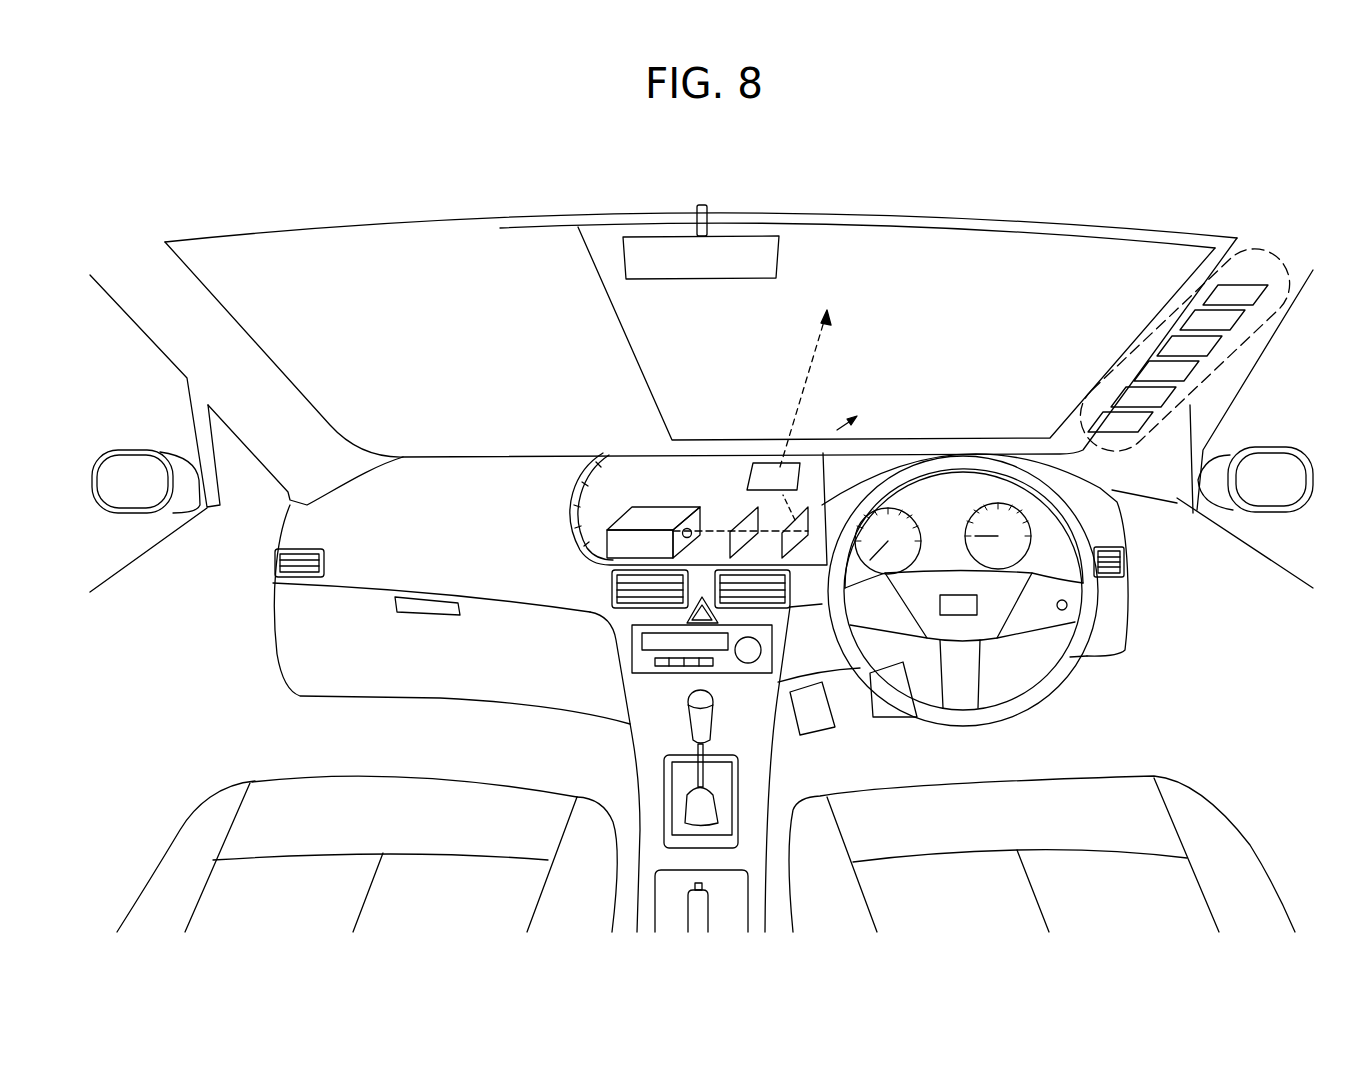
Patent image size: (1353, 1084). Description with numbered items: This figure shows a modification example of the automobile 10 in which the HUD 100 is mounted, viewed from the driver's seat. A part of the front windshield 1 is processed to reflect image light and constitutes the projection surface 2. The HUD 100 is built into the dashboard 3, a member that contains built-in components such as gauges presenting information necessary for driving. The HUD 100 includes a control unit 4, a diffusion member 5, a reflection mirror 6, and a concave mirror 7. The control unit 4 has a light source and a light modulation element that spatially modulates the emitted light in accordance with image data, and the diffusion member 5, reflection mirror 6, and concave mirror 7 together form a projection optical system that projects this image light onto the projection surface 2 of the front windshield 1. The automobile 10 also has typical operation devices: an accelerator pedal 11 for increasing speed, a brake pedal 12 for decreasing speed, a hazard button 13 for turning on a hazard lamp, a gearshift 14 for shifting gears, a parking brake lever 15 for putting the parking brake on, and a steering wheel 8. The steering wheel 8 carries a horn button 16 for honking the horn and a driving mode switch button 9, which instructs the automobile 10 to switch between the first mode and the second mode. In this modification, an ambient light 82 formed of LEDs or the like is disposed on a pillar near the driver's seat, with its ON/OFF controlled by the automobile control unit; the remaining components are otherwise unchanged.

The front windshield 1 is at (362, 243).
The projection surface 2 is at (610, 300).
The dashboard 3 is at (516, 460).
The control unit 4 is at (643, 505).
The diffusion member 5 is at (740, 527).
The reflection mirror 6 is at (788, 529).
The concave mirror 7 is at (766, 462).
The steering wheel 8 is at (1060, 670).
The driving mode switch button 9 is at (1068, 605).
The automobile 10 is at (872, 186).
The accelerator pedal 11 is at (880, 718).
The brake pedal 12 is at (808, 722).
The hazard button 13 is at (698, 619).
The gearshift 14 is at (700, 727).
The parking brake lever 15 is at (703, 903).
The horn button 16 is at (958, 598).
The ambient light 82 is at (1230, 377).
The HUD 100 is at (603, 518).